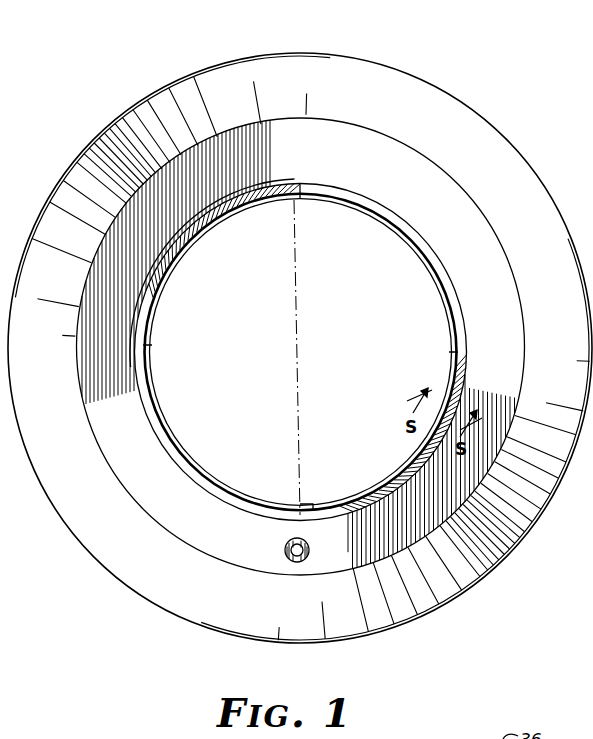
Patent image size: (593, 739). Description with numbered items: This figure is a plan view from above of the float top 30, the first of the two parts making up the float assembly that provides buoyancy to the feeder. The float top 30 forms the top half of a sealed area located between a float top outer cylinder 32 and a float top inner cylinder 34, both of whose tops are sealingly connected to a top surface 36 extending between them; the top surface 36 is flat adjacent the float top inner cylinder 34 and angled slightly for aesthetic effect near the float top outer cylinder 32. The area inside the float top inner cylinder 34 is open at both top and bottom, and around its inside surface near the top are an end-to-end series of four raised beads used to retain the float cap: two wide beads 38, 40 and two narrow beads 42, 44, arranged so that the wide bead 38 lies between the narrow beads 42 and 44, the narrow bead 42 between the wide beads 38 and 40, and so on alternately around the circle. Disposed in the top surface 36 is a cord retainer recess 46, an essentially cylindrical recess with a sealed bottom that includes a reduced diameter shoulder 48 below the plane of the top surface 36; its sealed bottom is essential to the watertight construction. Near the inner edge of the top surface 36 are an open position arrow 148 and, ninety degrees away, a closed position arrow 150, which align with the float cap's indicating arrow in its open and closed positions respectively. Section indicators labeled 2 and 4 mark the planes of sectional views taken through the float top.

The float top 30 is at (158, 624).
The float top outer cylinder 32 is at (86, 153).
The float top inner cylinder 34 is at (234, 222).
The top surface 36 is at (495, 153).
The wide bead 38 is at (176, 270).
The wide bead 40 is at (394, 466).
The narrow bead 42 is at (213, 478).
The narrow bead 44 is at (397, 228).
The cord retainer recess 46 is at (284, 541).
The reduced diameter shoulder 48 is at (318, 538).
The open position arrow 148 is at (487, 350).
The closed position arrow 150 is at (298, 161).
The section line 2- 2 is at (280, 668).
The section line 4- 4 is at (500, 282).